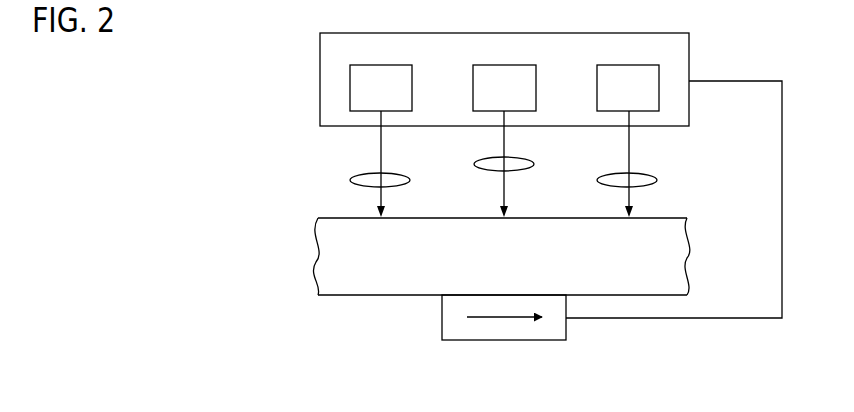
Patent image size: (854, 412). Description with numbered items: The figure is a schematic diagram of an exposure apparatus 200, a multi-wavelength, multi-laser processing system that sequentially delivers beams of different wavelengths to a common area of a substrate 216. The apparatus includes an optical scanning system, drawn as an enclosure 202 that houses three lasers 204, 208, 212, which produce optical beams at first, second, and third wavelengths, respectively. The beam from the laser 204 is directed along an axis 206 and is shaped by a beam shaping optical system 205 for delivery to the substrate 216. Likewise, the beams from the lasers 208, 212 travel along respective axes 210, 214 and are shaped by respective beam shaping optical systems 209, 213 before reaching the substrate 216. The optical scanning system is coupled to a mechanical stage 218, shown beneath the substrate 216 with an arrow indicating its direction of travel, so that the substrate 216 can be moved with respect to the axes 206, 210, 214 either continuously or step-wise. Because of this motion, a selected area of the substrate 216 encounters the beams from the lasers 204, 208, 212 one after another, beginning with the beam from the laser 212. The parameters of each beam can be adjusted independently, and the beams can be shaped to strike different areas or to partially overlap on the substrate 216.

The exposure apparatus 200 is at (203, 133).
The light source assembly 202 is at (676, 33).
The laser 204 is at (369, 65).
The beam shaping optical system 205 is at (352, 178).
The axis 206 is at (381, 165).
The laser 208 is at (490, 65).
The beam shaping optical system 209 is at (522, 160).
The axis 210 is at (504, 196).
The laser 212 is at (608, 65).
The beam shaping optical system 213 is at (598, 181).
The axis 214 is at (629, 165).
The substrate 216 is at (687, 218).
The mechanical stage 218 is at (441, 317).